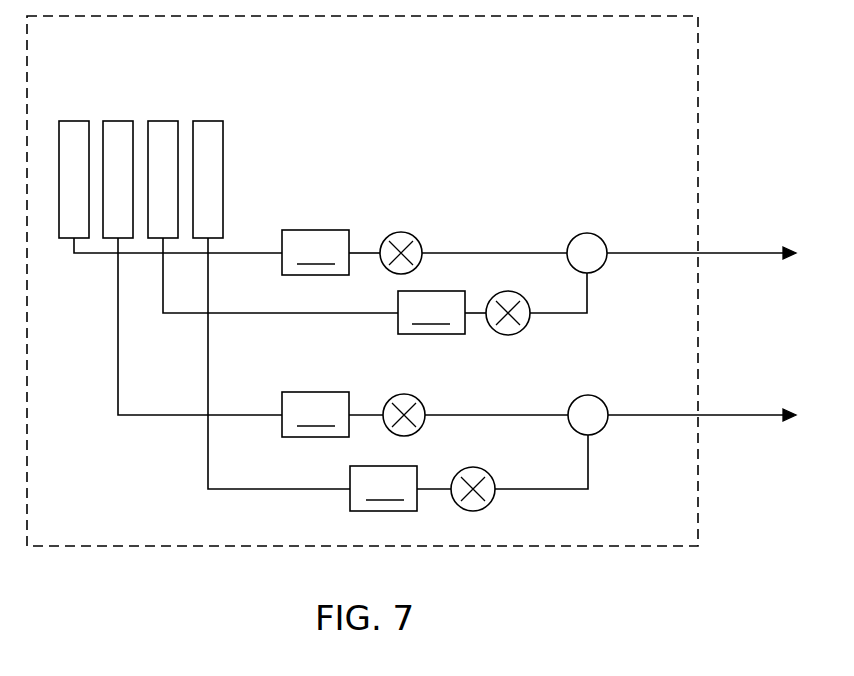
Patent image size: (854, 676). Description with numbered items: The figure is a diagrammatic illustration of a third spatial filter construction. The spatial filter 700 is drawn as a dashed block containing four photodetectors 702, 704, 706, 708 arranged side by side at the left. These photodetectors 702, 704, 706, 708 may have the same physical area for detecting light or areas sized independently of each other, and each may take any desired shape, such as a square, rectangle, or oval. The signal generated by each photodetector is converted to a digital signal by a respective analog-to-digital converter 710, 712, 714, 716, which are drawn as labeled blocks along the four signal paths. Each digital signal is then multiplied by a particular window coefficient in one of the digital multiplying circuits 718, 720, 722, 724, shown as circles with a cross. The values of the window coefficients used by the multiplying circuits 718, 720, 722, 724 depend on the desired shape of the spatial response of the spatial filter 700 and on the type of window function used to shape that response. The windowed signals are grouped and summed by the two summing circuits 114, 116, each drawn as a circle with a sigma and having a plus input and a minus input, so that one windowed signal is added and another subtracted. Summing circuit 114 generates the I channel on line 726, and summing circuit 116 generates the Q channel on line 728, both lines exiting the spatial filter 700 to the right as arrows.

The spatial filter 700 is at (155, 546).
The photodetector 702 is at (74, 120).
The photodetector 704 is at (118, 120).
The photodetector 706 is at (162, 120).
The photodetector 708 is at (207, 120).
The analog-to-digital converter 710 is at (315, 252).
The analog-to-digital converter 712 is at (315, 414).
The analog-to-digital converter 714 is at (431, 312).
The analog-to-digital converter 716 is at (383, 488).
The digital multiplying circuit 718 is at (404, 233).
The digital multiplying circuit 720 is at (421, 400).
The digital multiplying circuit 722 is at (528, 322).
The digital multiplying circuit 724 is at (492, 498).
The summing circuit 114 is at (594, 236).
The summing circuit 116 is at (604, 428).
The line 726 is at (734, 253).
The line 728 is at (742, 416).